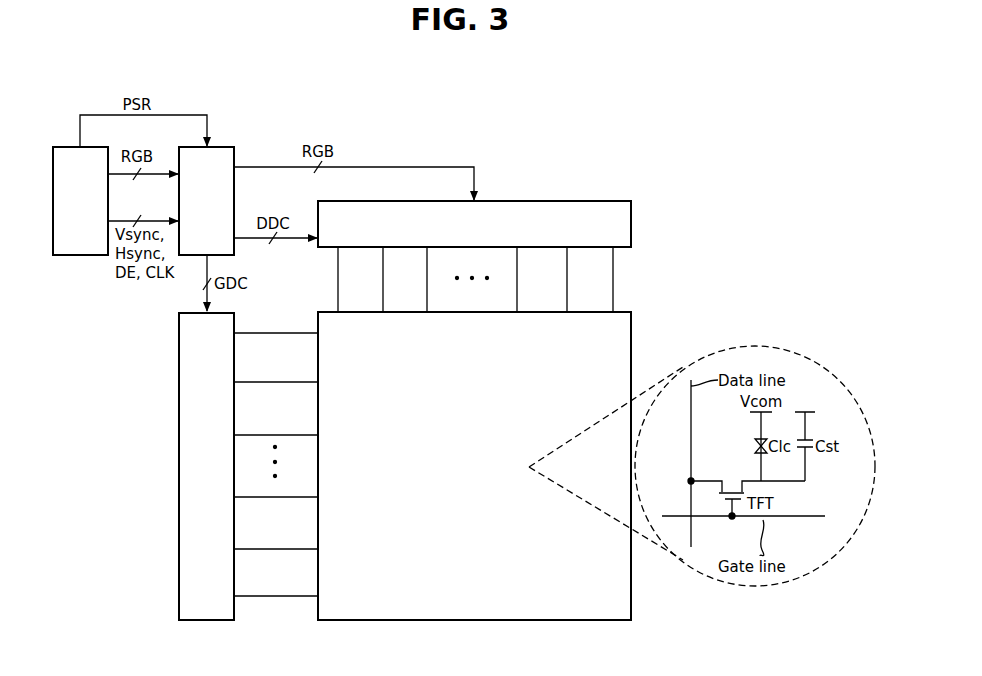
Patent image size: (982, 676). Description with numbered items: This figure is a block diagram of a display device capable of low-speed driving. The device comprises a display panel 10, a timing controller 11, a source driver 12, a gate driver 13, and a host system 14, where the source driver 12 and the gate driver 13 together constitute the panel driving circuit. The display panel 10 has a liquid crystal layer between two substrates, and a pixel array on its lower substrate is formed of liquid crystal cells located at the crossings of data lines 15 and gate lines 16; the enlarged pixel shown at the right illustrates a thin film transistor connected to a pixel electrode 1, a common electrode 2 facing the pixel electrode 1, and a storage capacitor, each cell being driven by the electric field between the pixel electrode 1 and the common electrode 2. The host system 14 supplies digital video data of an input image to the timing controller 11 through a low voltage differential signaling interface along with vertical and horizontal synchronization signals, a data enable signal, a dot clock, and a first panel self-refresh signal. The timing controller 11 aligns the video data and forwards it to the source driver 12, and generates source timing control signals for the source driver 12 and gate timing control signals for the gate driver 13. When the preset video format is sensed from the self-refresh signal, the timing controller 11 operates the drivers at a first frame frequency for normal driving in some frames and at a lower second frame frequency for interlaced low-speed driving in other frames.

The display panel 10 is at (464, 468).
The timing controller 11 is at (198, 214).
The source driver 12 is at (465, 233).
The gate driver 13 is at (198, 471).
The host system 14 is at (71, 214).
The data lines 15 is at (613, 278).
The gate lines 16 is at (277, 597).
The pixel electrode 1 is at (756, 451).
The common electrode 2 is at (756, 441).